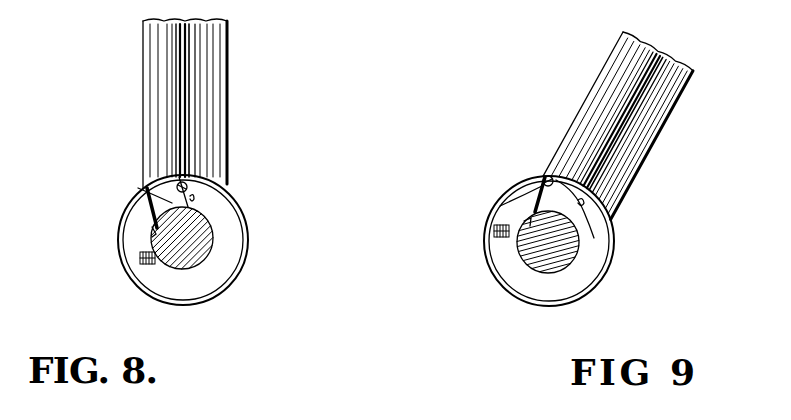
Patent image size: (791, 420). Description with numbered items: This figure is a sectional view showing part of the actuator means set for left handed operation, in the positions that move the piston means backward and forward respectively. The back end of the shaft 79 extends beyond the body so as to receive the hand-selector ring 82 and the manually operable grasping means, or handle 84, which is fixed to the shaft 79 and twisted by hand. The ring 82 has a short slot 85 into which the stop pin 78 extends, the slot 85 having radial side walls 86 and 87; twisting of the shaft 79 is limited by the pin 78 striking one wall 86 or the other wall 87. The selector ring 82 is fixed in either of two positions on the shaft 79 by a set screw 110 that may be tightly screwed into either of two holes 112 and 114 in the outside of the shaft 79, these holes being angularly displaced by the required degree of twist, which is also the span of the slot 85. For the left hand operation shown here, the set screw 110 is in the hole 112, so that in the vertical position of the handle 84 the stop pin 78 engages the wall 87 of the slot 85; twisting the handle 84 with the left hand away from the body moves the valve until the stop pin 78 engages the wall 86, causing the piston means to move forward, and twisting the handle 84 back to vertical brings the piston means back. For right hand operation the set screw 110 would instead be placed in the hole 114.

In FIG. 8, the pin 78 is at (228, 178).
In FIG. 9, the pin 78 is at (547, 177).
In FIG. 8, the shaft 79 is at (207, 242).
In FIG. 9, the shaft 79 is at (570, 240).
In FIG. 8, the hand-selector ring 82 is at (218, 270).
In FIG. 9, the hand-selector ring 82 is at (590, 265).
In FIG. 8, the manually operable grasping means (handle) 84 is at (212, 153).
In FIG. 9, the manually operable grasping means (handle) 84 is at (580, 115).
In FIG. 8, the slot 85 is at (170, 192).
In FIG. 9, the slot 85 is at (568, 177).
In FIG. 8, the radial side wall 86 is at (147, 190).
In FIG. 9, the radial side wall 86 is at (532, 212).
In FIG. 8, the radial side wall 87 is at (180, 205).
In FIG. 9, the radial side wall 87 is at (587, 187).
In FIG. 8, the set screw 110 is at (148, 260).
In FIG. 9, the set screw 110 is at (502, 237).
In FIG. 8, the hole 112 is at (153, 277).
In FIG. 8, the hole 114 is at (152, 232).
In FIG. 9, the hole 114 is at (528, 220).